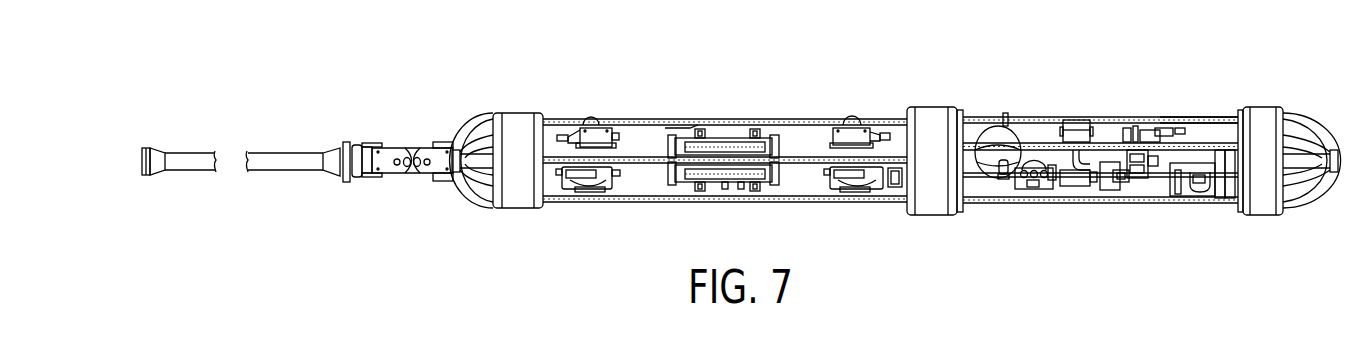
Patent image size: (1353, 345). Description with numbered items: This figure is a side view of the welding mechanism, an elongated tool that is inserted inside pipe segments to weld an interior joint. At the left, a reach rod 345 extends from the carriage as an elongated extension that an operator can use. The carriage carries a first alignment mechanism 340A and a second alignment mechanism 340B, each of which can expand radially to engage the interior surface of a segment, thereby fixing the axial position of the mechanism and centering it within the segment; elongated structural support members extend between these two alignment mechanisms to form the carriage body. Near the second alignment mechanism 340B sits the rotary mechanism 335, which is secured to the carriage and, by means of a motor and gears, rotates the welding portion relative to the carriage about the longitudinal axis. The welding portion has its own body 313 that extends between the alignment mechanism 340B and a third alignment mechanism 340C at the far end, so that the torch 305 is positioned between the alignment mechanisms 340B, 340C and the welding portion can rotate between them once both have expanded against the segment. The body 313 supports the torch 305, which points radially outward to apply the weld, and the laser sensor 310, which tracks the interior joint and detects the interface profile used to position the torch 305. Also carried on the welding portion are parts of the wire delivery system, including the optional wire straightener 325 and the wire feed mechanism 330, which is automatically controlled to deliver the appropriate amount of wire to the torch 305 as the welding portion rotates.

The reach rod 345 is at (277, 152).
The alignment mechanism 340A is at (518, 115).
The alignment mechanism 340B is at (926, 110).
The alignment mechanism 340C is at (1263, 107).
The rotary mechanism 335 is at (902, 183).
The wire feed mechanism 330 is at (1073, 127).
The torch 305 is at (1147, 127).
The body 313 is at (1185, 115).
The wire straightener 325 is at (1042, 188).
The laser sensor 310 is at (1127, 178).